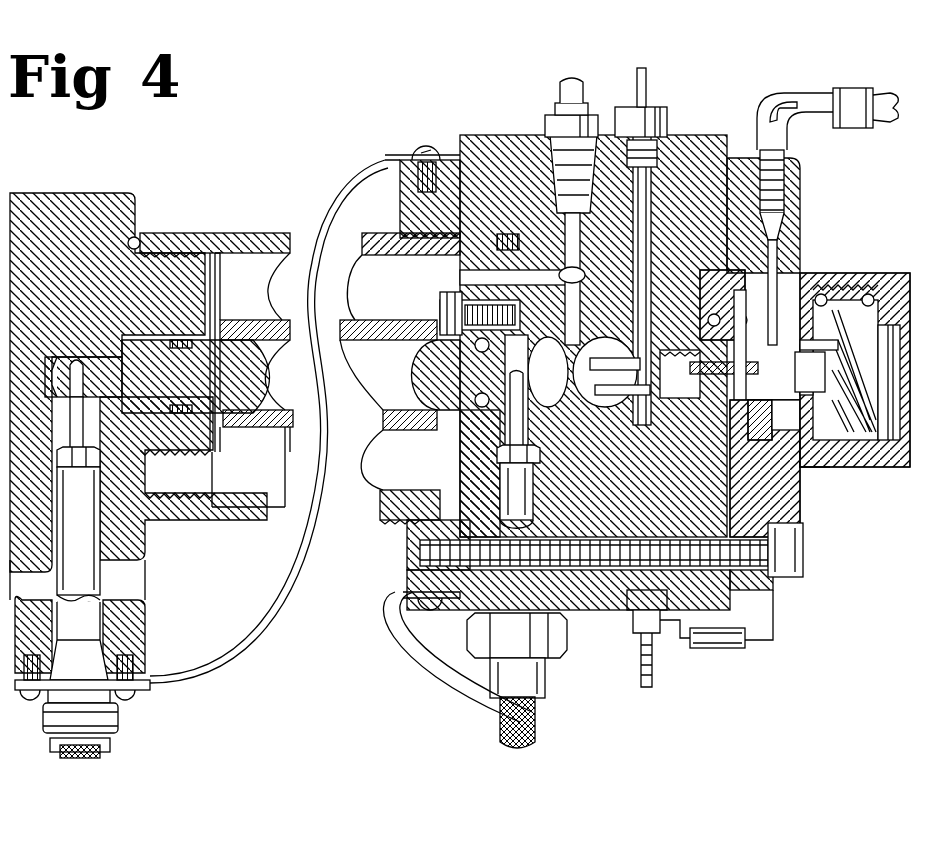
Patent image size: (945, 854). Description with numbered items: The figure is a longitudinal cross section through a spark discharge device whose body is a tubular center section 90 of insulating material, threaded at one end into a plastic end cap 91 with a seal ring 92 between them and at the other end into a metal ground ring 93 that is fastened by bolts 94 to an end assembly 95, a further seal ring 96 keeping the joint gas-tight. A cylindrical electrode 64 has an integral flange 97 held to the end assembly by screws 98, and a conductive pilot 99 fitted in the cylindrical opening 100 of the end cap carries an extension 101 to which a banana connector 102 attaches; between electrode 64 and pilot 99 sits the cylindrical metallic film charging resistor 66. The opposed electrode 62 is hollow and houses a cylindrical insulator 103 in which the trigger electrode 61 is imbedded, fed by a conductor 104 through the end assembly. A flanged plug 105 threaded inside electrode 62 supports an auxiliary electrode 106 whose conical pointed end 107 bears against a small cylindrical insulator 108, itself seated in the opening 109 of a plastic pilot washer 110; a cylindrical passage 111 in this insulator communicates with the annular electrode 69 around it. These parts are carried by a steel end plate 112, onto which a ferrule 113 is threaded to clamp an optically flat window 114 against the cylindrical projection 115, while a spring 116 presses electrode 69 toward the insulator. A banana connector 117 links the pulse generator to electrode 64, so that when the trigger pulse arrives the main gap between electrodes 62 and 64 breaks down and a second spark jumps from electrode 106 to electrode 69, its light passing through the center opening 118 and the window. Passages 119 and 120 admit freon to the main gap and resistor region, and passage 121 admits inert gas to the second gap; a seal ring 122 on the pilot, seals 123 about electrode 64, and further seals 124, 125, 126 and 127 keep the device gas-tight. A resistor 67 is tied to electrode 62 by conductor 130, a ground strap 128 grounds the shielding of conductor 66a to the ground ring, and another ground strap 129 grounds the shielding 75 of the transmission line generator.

The trigger electrode 61 is at (608, 376).
The electrode 62 is at (606, 398).
The electrode 64 is at (412, 375).
The metallic film charging resistor 66 is at (232, 320).
The conductor 66a is at (100, 752).
The resistor 67 is at (725, 648).
The annular electrode 69 is at (820, 418).
The shielding 75 is at (540, 722).
The tubular center section 90 is at (175, 233).
The end cap 91 is at (118, 196).
The seal ring 92 is at (138, 236).
The ground ring 93 is at (400, 212).
The bolts 94 is at (803, 565).
The end assembly 95 is at (476, 133).
The seal ring 96 is at (518, 248).
The integral flange 97 is at (450, 302).
The screws 98 is at (500, 306).
The pilot 99 is at (227, 377).
The cylindrical opening 100 is at (155, 340).
The extension 101 is at (105, 357).
The banana connector 102 is at (70, 432).
The cylindrical insulator 103 is at (654, 412).
The conductor 104 is at (648, 72).
The flanged plug 105 is at (707, 401).
The auxiliary electrode 106 is at (708, 375).
The conical pointed end 107 is at (800, 345).
The cylindrical insulator 108 is at (752, 445).
The opening 109 is at (740, 290).
The pilot washer 110 is at (712, 270).
The cylindrical passage 111 is at (786, 405).
The end plate 112 is at (800, 195).
The ferrule 113 is at (850, 273).
The optically flat window 114 is at (890, 462).
The cylindrical projection 115 is at (812, 470).
The spring 116 is at (808, 290).
The banana connector 117 is at (530, 436).
The center opening 118 is at (780, 372).
The passage 119 is at (586, 256).
The passage 120 is at (512, 278).
The passage 121 is at (790, 240).
The seal ring 122 is at (170, 410).
The seals 123 is at (558, 362).
The seal 124 is at (605, 427).
The seal 125 is at (708, 316).
The seal 126 is at (745, 460).
The seal 127 is at (812, 330).
The ground strap 128 is at (222, 648).
The ground strap 129 is at (428, 690).
The conductor 130 is at (645, 480).